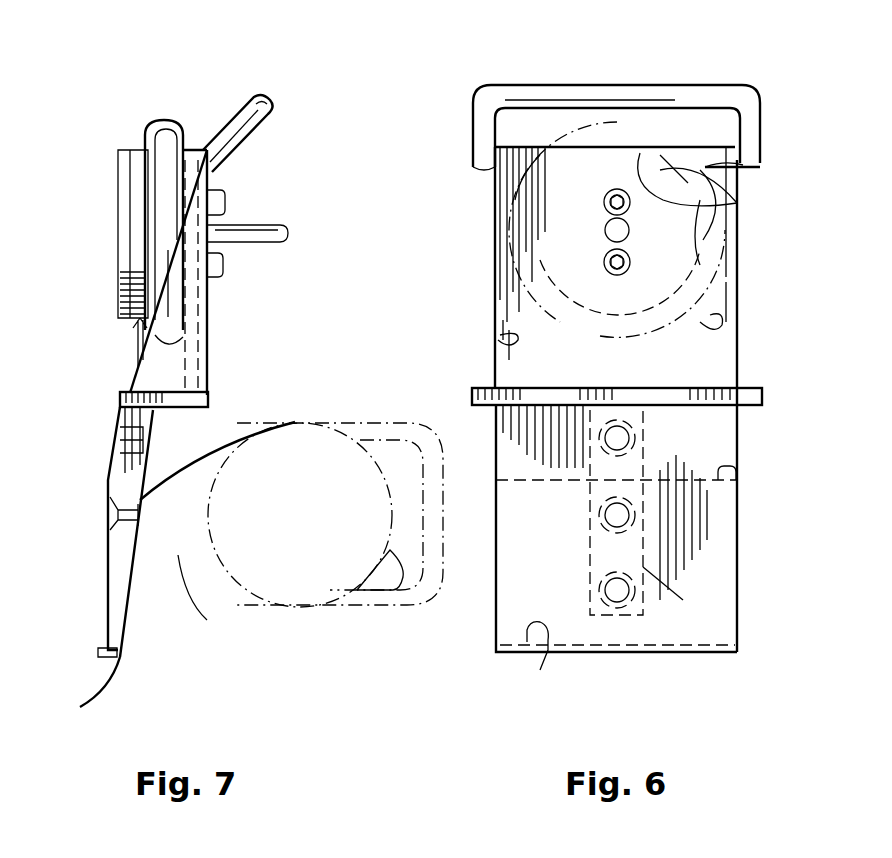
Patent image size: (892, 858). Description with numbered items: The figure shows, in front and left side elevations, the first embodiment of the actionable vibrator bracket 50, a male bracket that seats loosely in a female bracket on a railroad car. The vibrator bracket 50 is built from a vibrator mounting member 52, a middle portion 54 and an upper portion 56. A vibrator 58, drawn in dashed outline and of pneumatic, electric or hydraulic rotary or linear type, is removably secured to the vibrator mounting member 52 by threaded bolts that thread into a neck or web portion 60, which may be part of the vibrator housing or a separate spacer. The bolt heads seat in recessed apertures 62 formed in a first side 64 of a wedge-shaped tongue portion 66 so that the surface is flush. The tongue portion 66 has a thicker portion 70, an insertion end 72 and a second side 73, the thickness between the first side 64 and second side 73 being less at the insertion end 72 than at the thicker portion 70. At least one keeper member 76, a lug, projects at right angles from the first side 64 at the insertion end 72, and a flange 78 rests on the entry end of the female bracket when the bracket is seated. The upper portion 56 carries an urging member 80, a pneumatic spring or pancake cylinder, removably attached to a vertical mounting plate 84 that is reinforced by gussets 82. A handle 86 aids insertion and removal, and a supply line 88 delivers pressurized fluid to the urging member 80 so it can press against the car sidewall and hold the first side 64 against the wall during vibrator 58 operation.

In FIG. 6, the actionable vibrator bracket 50 is at (456, 128).
In FIG. 7, the actionable vibrator bracket 50 is at (270, 140).
In FIG. 6, the vibrator mounting member 52 is at (478, 605).
In FIG. 7, the vibrator mounting member 52 is at (145, 594).
In FIG. 6, the middle portion 54 is at (480, 378).
In FIG. 7, the middle portion 54 is at (225, 398).
In FIG. 6, the upper portion 56 is at (488, 245).
In FIG. 7, the upper portion 56 is at (227, 297).
In FIG. 7, the vibrator 58 is at (393, 588).
In FIG. 6, the neck or web portion 60 is at (683, 600).
In FIG. 7, the neck or web portion 60 is at (207, 620).
In FIG. 6, the recessed apertures 62 is at (640, 437).
In FIG. 7, the recessed apertures 62 is at (125, 440).
In FIG. 7, the first side 64 is at (106, 555).
In FIG. 6, the tongue portion 66 is at (740, 560).
In FIG. 7, the tongue portion 66 is at (133, 636).
In FIG. 6, the thicker portion 70 is at (737, 475).
In FIG. 7, the thicker portion 70 is at (106, 480).
In FIG. 6, the insertion end 72 is at (670, 653).
In FIG. 7, the insertion end 72 is at (80, 707).
In FIG. 7, the second side 73 is at (270, 423).
In FIG. 6, the keeper member 76 is at (540, 670).
In FIG. 7, the keeper member 76 is at (98, 648).
In FIG. 6, the flange 78 is at (472, 390).
In FIG. 7, the flange 78 is at (130, 392).
In FIG. 6, the urging member 80 is at (760, 168).
In FIG. 7, the urging member 80 is at (118, 150).
In FIG. 6, the gussets 82 is at (505, 333).
In FIG. 7, the gussets 82 is at (163, 255).
In FIG. 6, the vertical mounting plate 84 is at (737, 203).
In FIG. 7, the vertical mounting plate 84 is at (210, 283).
In FIG. 6, the handle 86 is at (548, 85).
In FIG. 7, the handle 86 is at (235, 118).
In FIG. 6, the supply line 88 is at (606, 232).
In FIG. 7, the supply line 88 is at (246, 226).